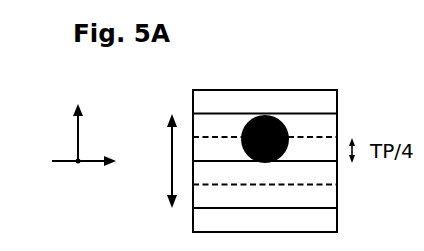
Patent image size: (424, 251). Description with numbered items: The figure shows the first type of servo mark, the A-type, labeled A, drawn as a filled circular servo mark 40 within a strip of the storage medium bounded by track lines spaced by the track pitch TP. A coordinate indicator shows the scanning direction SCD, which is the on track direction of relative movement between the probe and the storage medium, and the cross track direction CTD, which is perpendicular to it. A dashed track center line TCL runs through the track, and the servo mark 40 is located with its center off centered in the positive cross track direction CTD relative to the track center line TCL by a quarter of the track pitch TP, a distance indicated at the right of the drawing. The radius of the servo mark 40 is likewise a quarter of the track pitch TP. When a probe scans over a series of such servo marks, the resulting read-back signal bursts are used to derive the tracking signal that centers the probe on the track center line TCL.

The servo mark 40 is at (265, 116).
The A-type servo mark A is at (265, 146).
The track pitch TP is at (156, 161).
The track center line TCL is at (265, 147).
The cross track direction CTD is at (53, 134).
The scanning direction SCD is at (84, 175).